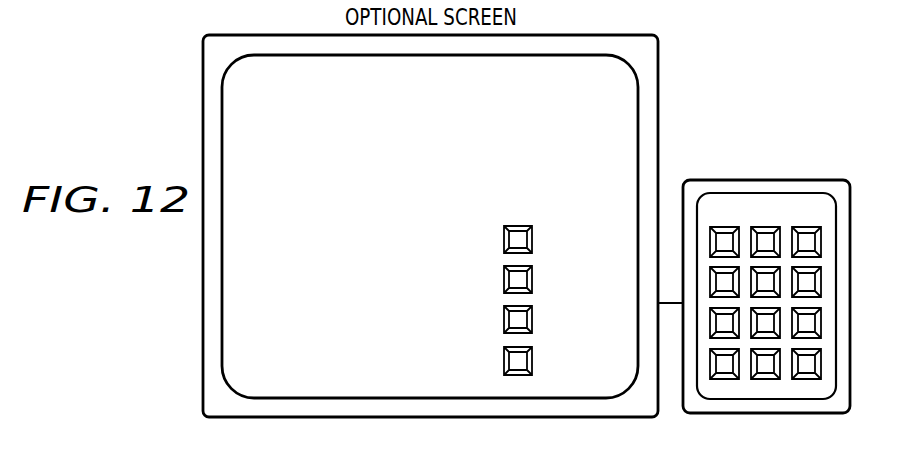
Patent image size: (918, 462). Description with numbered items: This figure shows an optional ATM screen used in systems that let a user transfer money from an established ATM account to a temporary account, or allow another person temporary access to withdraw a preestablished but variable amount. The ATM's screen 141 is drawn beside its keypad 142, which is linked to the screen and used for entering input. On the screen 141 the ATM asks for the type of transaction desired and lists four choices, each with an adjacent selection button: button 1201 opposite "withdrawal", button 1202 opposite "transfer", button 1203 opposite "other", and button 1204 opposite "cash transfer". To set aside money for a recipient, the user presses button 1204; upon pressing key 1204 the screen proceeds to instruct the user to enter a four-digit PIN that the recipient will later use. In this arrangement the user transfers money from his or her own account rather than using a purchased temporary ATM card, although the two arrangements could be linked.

The screen 141 is at (203, 98).
The keypad 142 is at (777, 180).
The button 1201 is at (532, 239).
The button 1202 is at (532, 279).
The button 1203 is at (532, 318).
The button 1204 is at (532, 360).